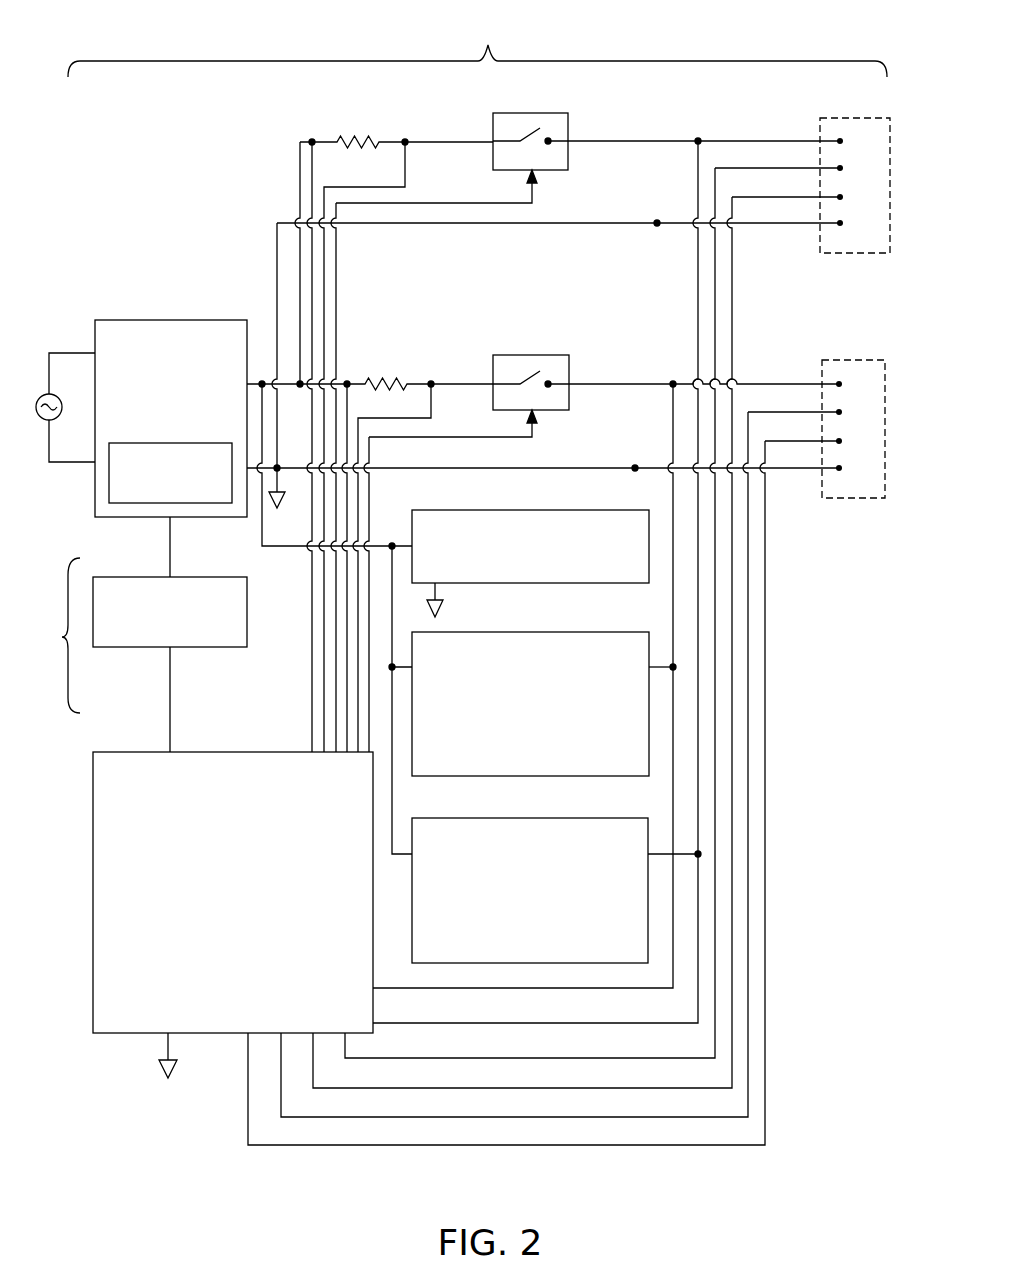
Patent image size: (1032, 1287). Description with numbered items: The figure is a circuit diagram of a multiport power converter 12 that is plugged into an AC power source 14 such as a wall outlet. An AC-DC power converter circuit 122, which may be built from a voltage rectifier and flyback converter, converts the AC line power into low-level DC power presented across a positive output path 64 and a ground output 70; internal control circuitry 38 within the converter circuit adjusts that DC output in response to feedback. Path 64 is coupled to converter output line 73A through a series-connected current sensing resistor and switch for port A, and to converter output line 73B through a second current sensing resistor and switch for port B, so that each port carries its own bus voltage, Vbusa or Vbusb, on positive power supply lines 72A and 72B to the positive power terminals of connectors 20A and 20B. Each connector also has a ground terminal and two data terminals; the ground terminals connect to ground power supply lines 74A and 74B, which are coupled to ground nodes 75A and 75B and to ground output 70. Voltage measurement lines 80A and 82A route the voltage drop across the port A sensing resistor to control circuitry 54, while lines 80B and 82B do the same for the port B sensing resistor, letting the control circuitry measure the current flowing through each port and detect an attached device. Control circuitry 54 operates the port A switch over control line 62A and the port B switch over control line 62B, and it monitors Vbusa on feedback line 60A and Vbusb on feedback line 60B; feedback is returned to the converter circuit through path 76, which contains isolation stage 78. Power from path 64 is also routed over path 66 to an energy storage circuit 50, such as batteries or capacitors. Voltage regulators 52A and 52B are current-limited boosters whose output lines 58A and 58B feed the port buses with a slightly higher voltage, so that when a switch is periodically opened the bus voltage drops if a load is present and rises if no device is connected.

The power converter 12 is at (477, 48).
The AC power source 14 is at (62, 405).
The AC-DC power converter circuit 122 is at (173, 320).
The control circuitry 38 is at (108, 484).
The output path 64 is at (262, 380).
The path 66 is at (262, 528).
The ground output 70 is at (277, 462).
The voltage measurement line 80B is at (313, 160).
The voltage measurement line 82B is at (407, 168).
The control line 62B is at (534, 190).
The converter output line 73B is at (612, 140).
The positive power supply line 72B is at (760, 140).
The feedback path 60B is at (698, 285).
The ground node 75B is at (487, 210).
The ground power supply line 74B is at (781, 228).
The connector 20B is at (833, 254).
The voltage measurement line 80A is at (350, 408).
The voltage measurement line 82A is at (417, 430).
The control line 62A is at (489, 439).
The converter output line 73A is at (598, 382).
The positive power supply line 72A is at (768, 382).
The feedback path 60A is at (672, 410).
The ground node 75A is at (460, 483).
The ground power supply line 74A is at (781, 470).
The connector 20A is at (827, 498).
The energy storage circuit 50 is at (486, 510).
The voltage regulator 52A is at (486, 632).
The line 58A is at (656, 660).
The voltage regulator 52B is at (486, 818).
The line 58B is at (656, 847).
The isolation stage 78 is at (130, 648).
The path 76 is at (55, 635).
The control circuitry 54 is at (118, 1033).